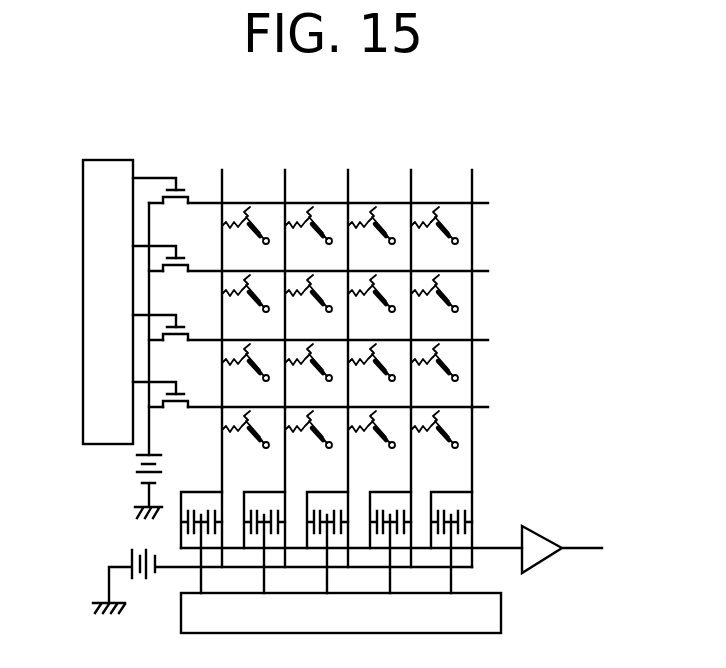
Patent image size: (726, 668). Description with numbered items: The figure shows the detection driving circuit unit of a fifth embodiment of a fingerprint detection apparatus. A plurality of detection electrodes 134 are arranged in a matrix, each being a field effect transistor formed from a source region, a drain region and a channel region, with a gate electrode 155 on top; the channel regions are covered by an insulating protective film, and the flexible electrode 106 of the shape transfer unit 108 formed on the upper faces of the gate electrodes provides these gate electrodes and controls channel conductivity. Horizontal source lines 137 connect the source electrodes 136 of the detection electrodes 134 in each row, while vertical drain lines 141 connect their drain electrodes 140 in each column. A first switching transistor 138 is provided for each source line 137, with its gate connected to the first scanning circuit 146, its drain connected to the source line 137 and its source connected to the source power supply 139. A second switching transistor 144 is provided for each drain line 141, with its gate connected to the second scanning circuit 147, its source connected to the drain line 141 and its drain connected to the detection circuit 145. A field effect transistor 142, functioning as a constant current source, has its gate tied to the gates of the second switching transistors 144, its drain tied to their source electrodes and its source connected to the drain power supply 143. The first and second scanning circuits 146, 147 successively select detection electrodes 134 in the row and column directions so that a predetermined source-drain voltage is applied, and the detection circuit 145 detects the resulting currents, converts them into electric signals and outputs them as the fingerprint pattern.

The flexible electrode 106 is at (458, 240).
The shape transfer unit 108 is at (447, 223).
The detection electrode 134 is at (430, 208).
The source electrode 136 is at (437, 213).
The source line 137 is at (478, 339).
The first switching transistor 138 is at (185, 191).
The source power supply 139 is at (143, 482).
The drain electrode 140 is at (420, 207).
The drain line 141 is at (472, 400).
The field effect transistor 142 is at (470, 527).
The drain power supply 143 is at (130, 560).
The second switching transistor 144 is at (441, 513).
The detection circuit 145 is at (533, 557).
The first scanning circuit 146 is at (103, 446).
The second scanning circuit 147 is at (190, 618).
The gate electrode 155 is at (450, 220).